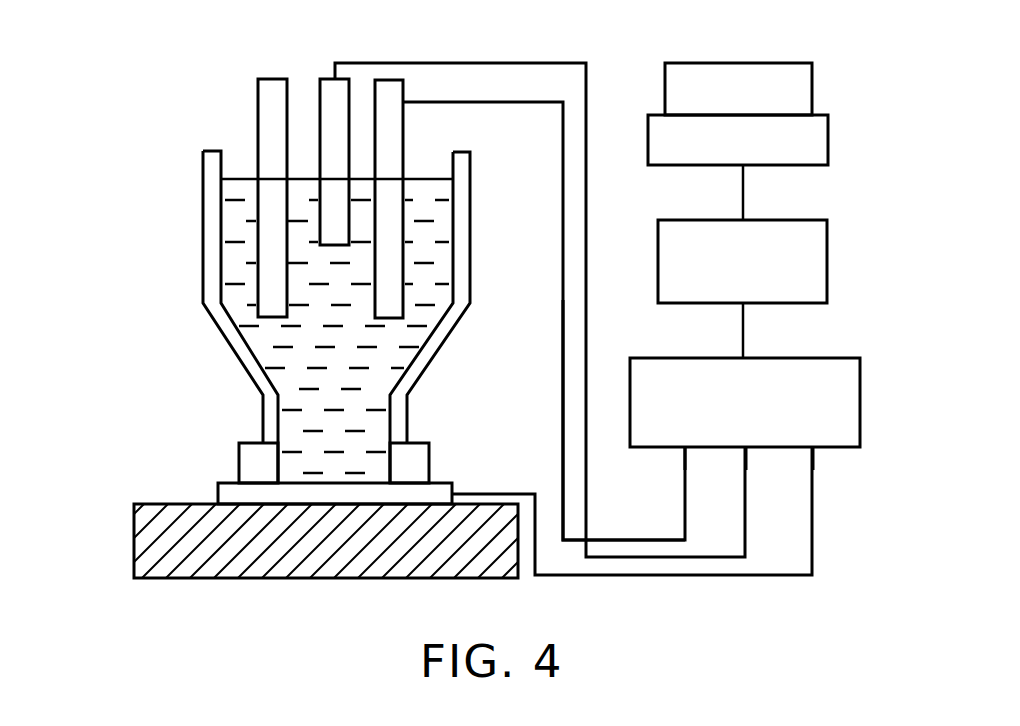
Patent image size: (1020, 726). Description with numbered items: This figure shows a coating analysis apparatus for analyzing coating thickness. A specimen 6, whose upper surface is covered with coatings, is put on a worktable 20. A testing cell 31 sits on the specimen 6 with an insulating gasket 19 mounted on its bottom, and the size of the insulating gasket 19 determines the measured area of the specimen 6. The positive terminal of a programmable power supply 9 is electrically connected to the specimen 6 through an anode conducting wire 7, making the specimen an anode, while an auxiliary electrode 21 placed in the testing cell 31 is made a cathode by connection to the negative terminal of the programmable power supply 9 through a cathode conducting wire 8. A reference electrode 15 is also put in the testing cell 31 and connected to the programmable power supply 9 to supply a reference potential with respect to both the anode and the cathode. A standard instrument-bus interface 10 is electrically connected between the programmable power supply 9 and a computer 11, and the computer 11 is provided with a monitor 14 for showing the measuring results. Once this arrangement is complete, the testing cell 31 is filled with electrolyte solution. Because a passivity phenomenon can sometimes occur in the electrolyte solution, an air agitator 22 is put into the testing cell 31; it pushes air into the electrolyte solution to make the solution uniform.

The testing cell 31 is at (203, 250).
The air agitator 22 is at (258, 124).
The auxiliary electrode 21 is at (320, 106).
The reference electrode 15 is at (403, 143).
The insulating gasket 19 is at (239, 462).
The specimen 6 is at (218, 492).
The anode conducting wire 7 is at (467, 494).
The cathode conducting wire 8 is at (592, 538).
The worktable 20 is at (134, 540).
The monitor 14 is at (812, 75).
The computer 11 is at (828, 143).
The IEEE 488 interface 10 is at (827, 265).
The programmable power supply 9 is at (850, 358).